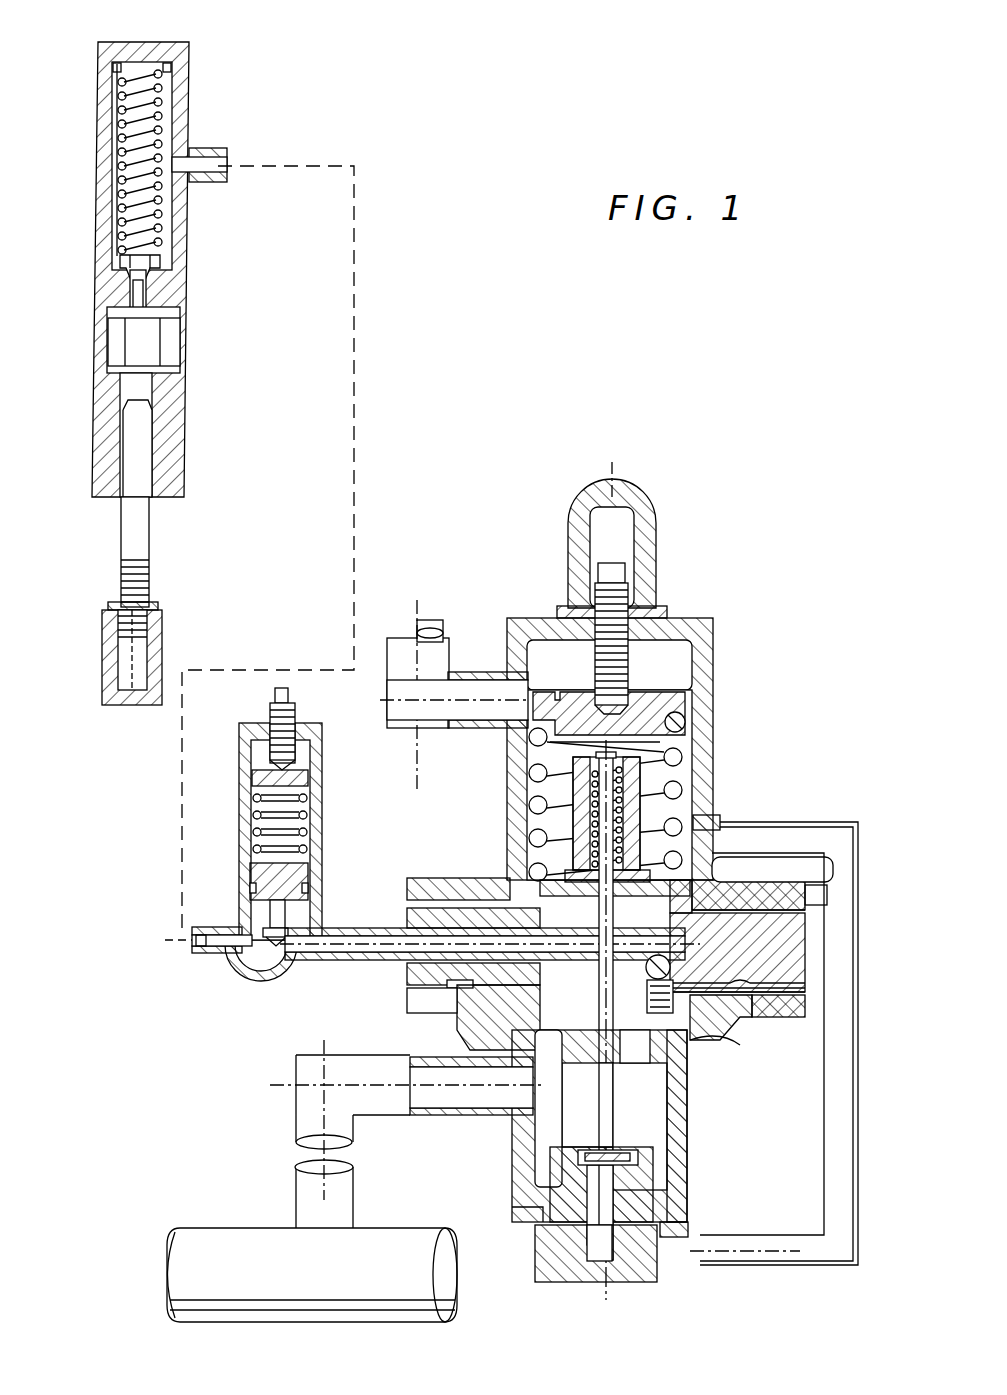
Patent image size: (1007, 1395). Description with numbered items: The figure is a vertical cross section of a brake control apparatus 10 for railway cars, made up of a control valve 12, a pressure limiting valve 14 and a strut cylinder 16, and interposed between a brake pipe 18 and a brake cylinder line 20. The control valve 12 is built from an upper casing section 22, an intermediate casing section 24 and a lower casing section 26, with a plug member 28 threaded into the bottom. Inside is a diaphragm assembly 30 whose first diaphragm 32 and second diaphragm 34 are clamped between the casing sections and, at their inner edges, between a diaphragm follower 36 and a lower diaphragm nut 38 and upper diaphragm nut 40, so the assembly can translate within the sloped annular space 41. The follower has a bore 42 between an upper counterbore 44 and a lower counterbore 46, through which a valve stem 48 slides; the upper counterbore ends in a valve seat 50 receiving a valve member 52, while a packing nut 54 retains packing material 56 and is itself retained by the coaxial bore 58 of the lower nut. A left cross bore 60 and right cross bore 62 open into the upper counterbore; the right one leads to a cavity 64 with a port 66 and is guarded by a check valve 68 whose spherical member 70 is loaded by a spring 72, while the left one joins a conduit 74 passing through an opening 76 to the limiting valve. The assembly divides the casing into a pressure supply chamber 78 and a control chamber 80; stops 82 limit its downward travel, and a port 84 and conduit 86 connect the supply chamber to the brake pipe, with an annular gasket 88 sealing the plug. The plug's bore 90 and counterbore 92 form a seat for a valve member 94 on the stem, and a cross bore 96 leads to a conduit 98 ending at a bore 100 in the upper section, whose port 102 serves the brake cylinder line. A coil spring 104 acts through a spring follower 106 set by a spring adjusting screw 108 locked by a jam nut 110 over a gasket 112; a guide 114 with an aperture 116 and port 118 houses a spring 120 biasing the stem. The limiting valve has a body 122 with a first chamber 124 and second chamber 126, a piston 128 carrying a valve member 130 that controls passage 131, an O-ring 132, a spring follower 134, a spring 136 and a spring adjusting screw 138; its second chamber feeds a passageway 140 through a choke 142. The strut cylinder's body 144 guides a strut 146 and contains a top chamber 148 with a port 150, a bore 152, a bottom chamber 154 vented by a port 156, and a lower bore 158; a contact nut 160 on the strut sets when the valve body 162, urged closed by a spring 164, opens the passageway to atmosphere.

The brake control apparatus 10 is at (508, 330).
The control valve 12 is at (531, 876).
The pressure limiting valve 14 is at (251, 851).
The strut cylinder 16 is at (202, 367).
The brake pipe 18 is at (398, 1245).
The brake cylinder line 20 is at (432, 630).
The upper casing section 22 is at (700, 635).
The intermediate casing section 24 is at (790, 935).
The lower casing section 26 is at (690, 1150).
The plug member 28 is at (665, 1280).
The diaphragm assembly 30 is at (750, 905).
The first diaphragm 32 is at (780, 1012).
The second diaphragm 34 is at (800, 898).
The diaphragm follower 36 is at (790, 912).
The lower diaphragm nut 38 is at (750, 1025).
The upper diaphragm nut 40 is at (712, 822).
The sloped annular space 41 is at (760, 869).
The bore 42 is at (470, 990).
The upper counterbore 44 is at (772, 869).
The lower counterbore 46 is at (500, 1030).
The valve stem 48 is at (625, 1090).
The valve seat 50 is at (545, 880).
The valve member 52 is at (580, 872).
The packing nut 54 is at (632, 1068).
The packing material 56 is at (510, 1082).
The coaxial bore 58 is at (580, 1080).
The left cross bore 60 is at (530, 885).
The right cross bore 62 is at (672, 965).
The cavity 64 is at (740, 1045).
The port 66 is at (675, 1075).
The check valve 68 is at (790, 944).
The spherical member 70 is at (795, 966).
The spring 72 is at (800, 988).
The conduit 74 is at (420, 955).
The opening 76 is at (430, 960).
The pressure supply chamber 78 is at (650, 1125).
The control chamber 80 is at (665, 665).
The stops 82 is at (700, 1040).
The port 84 is at (520, 1110).
The conduit 86 is at (297, 1118).
The annular gasket 88 is at (690, 1215).
The bore 90 is at (690, 1194).
The counterbore 92 is at (670, 1170).
The valve member 94 is at (600, 1152).
The cross bore 96 is at (618, 1282).
The conduit 98 is at (848, 1162).
The bore 100 is at (690, 815).
The port 102 is at (500, 690).
The coil spring 104 is at (685, 722).
The spring follower 106 is at (690, 695).
The spring adjusting screw 108 is at (630, 590).
The jam nut 110 is at (625, 478).
The gasket 112 is at (668, 610).
The guide 114 is at (685, 780).
The aperture 116 is at (690, 748).
The port 118 is at (573, 790).
The spring 120 is at (590, 818).
The body 122 is at (322, 755).
The first chamber 124 is at (256, 915).
The second chamber 126 is at (262, 965).
The piston 128 is at (300, 868).
The valve member 130 is at (290, 935).
The passage 131 is at (275, 945).
The O-ring 132 is at (308, 888).
The spring follower 134 is at (310, 778).
The spring 136 is at (310, 810).
The spring adjusting screw 138 is at (290, 712).
The passageway 140 is at (195, 942).
The choke 142 is at (222, 950).
The body 144 is at (192, 42).
The strut 146 is at (140, 526).
The top chamber 148 is at (165, 104).
The port 150 is at (165, 150).
The bore 152 is at (150, 292).
The bottom chamber 154 is at (160, 350).
The port 156 is at (180, 332).
The lower bore 158 is at (150, 445).
The contact nut 160 is at (160, 645).
The valve body 162 is at (158, 258).
The spring 164 is at (160, 206).